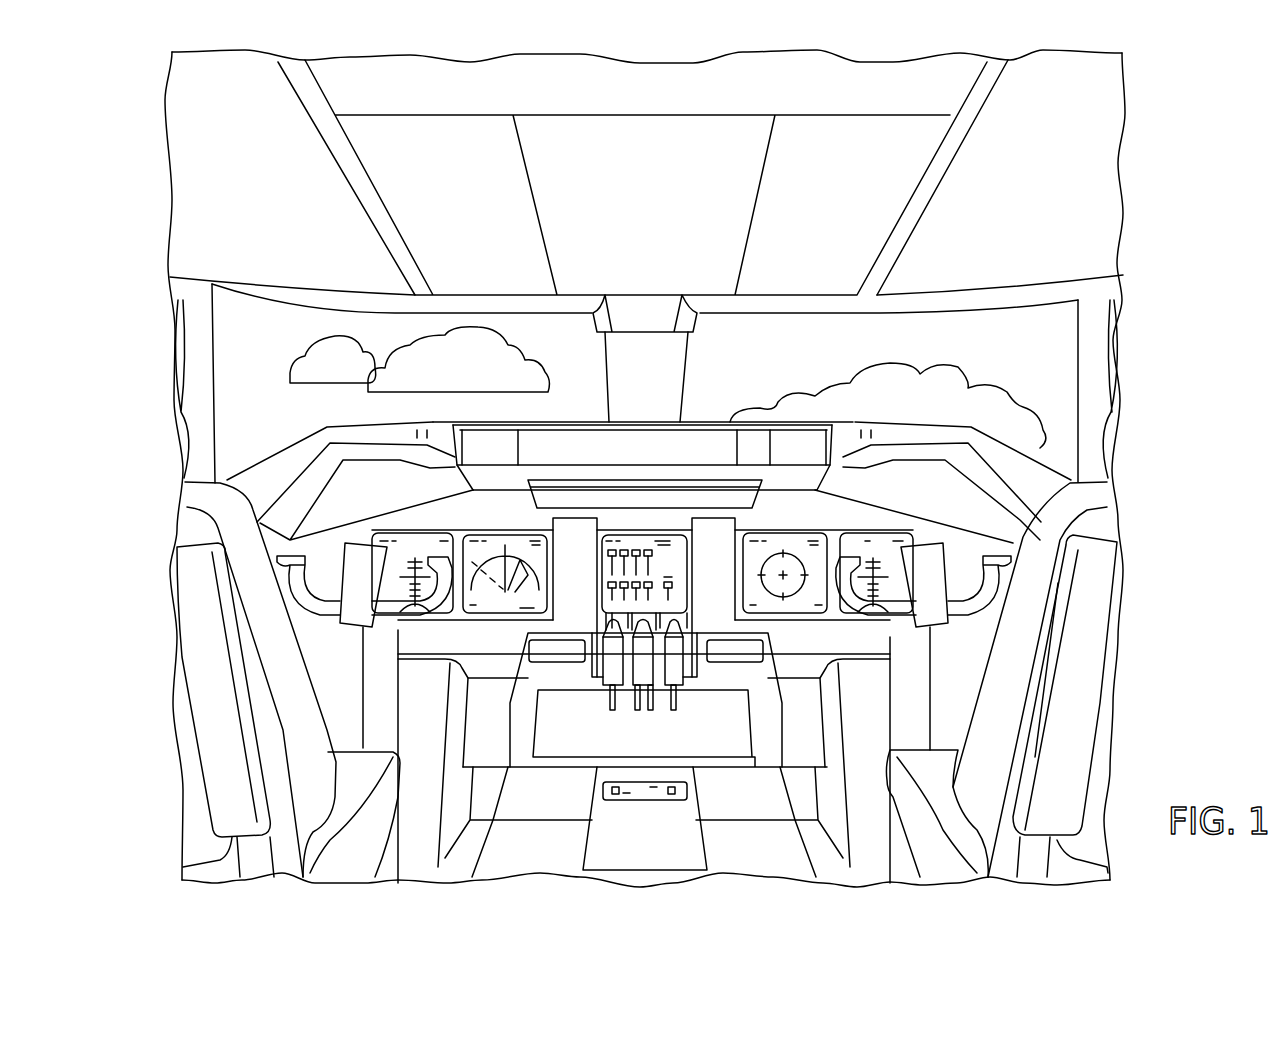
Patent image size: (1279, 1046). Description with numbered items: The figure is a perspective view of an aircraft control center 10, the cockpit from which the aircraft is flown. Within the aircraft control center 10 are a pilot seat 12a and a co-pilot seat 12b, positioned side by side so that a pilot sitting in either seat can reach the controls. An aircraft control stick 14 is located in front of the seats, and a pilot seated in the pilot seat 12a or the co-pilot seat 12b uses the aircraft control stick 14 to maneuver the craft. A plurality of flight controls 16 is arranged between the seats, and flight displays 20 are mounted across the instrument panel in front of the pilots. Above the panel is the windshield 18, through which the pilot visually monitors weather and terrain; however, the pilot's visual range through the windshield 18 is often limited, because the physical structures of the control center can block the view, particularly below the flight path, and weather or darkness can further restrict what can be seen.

The aircraft control center 10 is at (1178, 173).
The pilot seat 12a is at (177, 582).
The co-pilot seat 12b is at (1108, 595).
The aircraft control stick 14 is at (410, 620).
The flight controls 16 is at (680, 647).
The windshield 18 is at (233, 352).
The flight displays 20 is at (407, 532).